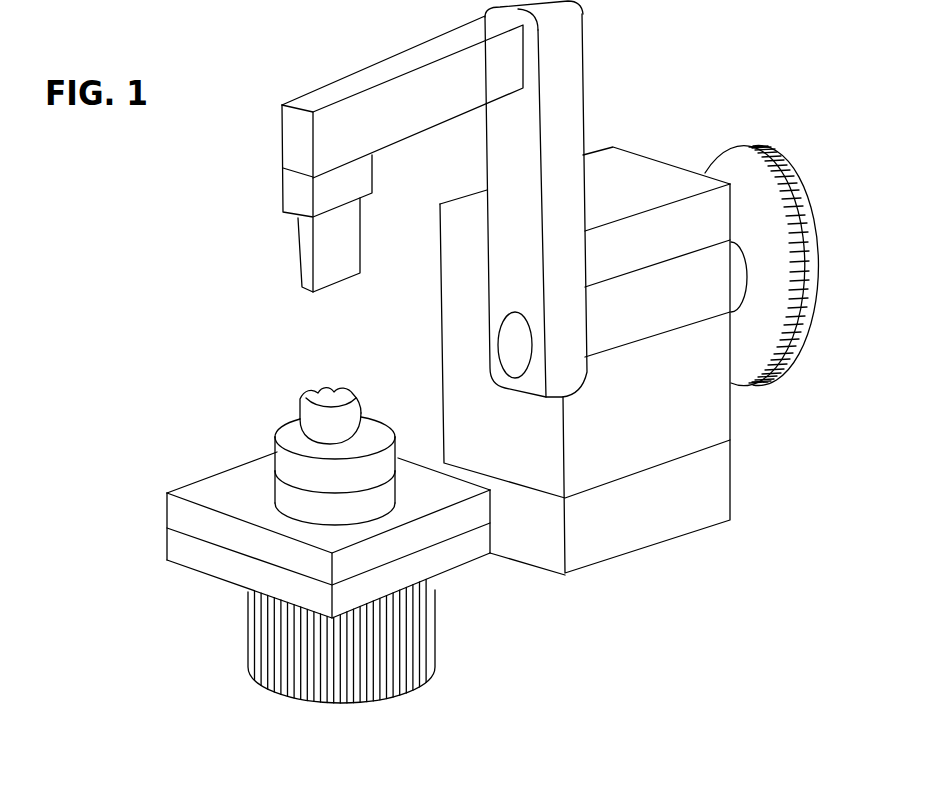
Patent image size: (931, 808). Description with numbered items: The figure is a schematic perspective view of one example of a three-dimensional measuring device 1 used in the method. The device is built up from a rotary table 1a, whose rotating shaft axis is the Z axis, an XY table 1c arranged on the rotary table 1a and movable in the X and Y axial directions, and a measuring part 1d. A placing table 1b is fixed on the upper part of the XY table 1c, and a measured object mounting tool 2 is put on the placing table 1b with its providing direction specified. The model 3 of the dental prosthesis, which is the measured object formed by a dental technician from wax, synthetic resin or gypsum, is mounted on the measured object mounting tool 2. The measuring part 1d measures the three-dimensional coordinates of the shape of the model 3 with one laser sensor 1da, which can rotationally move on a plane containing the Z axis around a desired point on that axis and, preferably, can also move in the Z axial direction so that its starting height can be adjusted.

The three-dimensional measuring device 1 is at (263, 85).
The rotary table 1a is at (268, 637).
The placing table 1b is at (286, 498).
The XY table 1c is at (181, 508).
The measuring part 1d is at (617, 182).
The laser sensor 1da is at (300, 253).
The measured object mounting tool 2 is at (288, 466).
The model of the dental prosthesis 3 is at (360, 406).